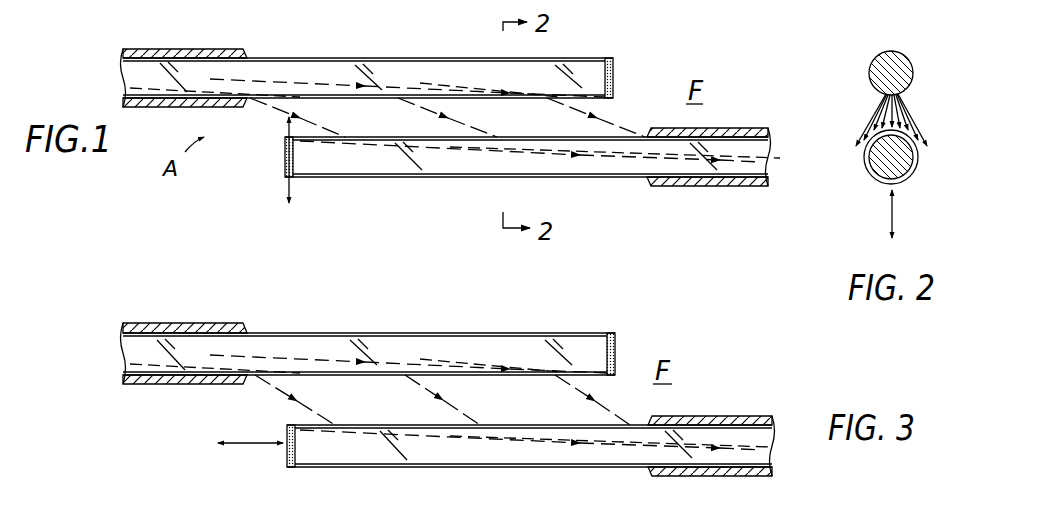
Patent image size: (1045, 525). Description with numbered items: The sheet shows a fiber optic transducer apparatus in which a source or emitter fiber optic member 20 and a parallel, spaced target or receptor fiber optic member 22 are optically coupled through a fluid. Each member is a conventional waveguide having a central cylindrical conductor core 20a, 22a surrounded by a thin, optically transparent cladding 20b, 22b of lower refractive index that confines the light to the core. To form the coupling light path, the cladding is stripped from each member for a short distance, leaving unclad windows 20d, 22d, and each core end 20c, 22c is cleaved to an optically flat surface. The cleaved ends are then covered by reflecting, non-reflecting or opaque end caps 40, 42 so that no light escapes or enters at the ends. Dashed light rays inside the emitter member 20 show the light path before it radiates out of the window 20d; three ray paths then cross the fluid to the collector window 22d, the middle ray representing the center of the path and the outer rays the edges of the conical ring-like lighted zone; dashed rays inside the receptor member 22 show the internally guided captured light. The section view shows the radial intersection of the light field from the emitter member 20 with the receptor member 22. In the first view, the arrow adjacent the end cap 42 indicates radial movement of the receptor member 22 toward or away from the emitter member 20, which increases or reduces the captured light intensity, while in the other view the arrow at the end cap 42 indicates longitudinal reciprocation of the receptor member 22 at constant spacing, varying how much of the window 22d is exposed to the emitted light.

In FIG. 1, the source or emitter fiber optic member 20 is at (410, 58).
In FIG. 2, the source or emitter fiber optic member 20 is at (888, 52).
In FIG. 3, the source or emitter fiber optic member 20 is at (396, 332).
In FIG. 1, the conductor core 20a is at (332, 66).
In FIG. 1, the cladding 20b is at (217, 50).
In FIG. 1, the core end 20c is at (614, 62).
In FIG. 1, the window 20d is at (424, 56).
In FIG. 1, the target or receptor fiber optic member 22 is at (513, 175).
In FIG. 2, the target or receptor fiber optic member 22 is at (880, 170).
In FIG. 3, the target or receptor fiber optic member 22 is at (496, 466).
In FIG. 1, the conductor core 22a is at (475, 178).
In FIG. 1, the cladding 22b is at (728, 187).
In FIG. 1, the core end 22c is at (283, 150).
In FIG. 1, the window 22d is at (377, 178).
In FIG. 3, the window 22d is at (458, 468).
In FIG. 1, the end cap 40 is at (614, 82).
In FIG. 3, the end cap 40 is at (617, 340).
In FIG. 1, the end cap 42 is at (284, 168).
In FIG. 3, the end cap 42 is at (287, 458).